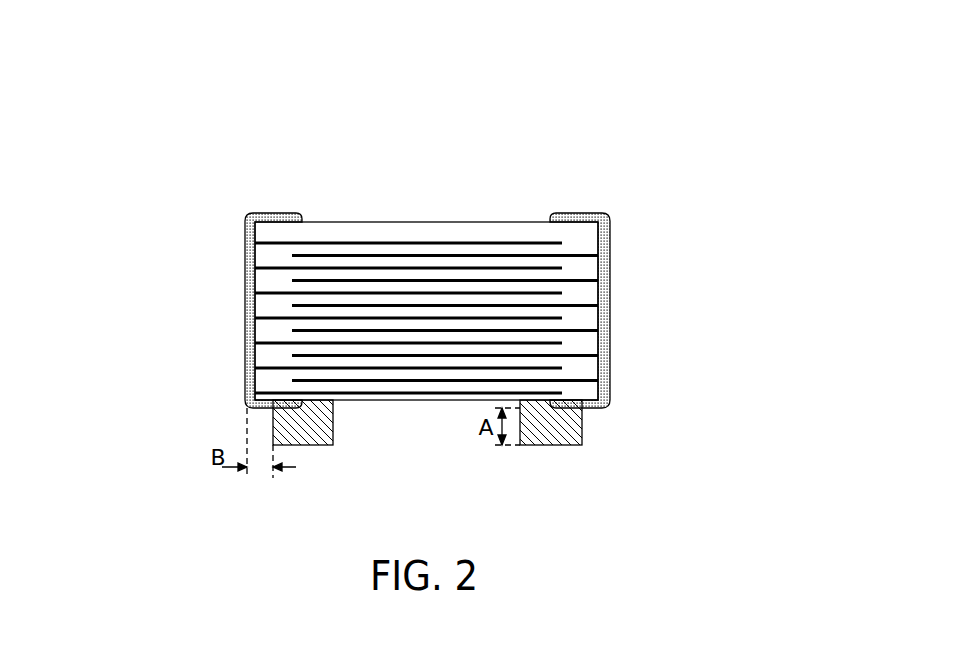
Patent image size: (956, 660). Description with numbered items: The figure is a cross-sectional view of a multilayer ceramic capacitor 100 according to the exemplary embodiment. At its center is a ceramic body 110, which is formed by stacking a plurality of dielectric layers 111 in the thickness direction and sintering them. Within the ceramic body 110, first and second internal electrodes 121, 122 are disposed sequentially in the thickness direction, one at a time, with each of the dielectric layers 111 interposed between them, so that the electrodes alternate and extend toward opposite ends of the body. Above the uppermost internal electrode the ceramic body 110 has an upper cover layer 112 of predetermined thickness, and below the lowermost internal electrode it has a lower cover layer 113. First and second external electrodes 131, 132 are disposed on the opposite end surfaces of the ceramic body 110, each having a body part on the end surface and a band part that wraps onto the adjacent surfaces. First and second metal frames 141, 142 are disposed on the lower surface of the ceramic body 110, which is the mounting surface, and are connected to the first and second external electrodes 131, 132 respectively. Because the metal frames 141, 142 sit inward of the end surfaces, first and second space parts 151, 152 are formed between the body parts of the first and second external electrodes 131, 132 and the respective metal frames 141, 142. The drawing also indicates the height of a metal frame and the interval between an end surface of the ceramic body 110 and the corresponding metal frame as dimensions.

The multilayer ceramic capacitor 100 is at (412, 105).
The ceramic body 110 is at (372, 222).
The dielectric layer 111 is at (560, 276).
The upper cover layer 112 is at (434, 232).
The lower cover layer 113 is at (422, 400).
The first internal electrode 121 is at (320, 252).
The second internal electrode 122 is at (498, 254).
The first external electrode 131 is at (272, 213).
The second external electrode 132 is at (582, 213).
The first metal frame 141 is at (306, 445).
The second metal frame 142 is at (550, 445).
The first space part 151 is at (259, 414).
The second space part 152 is at (591, 413).